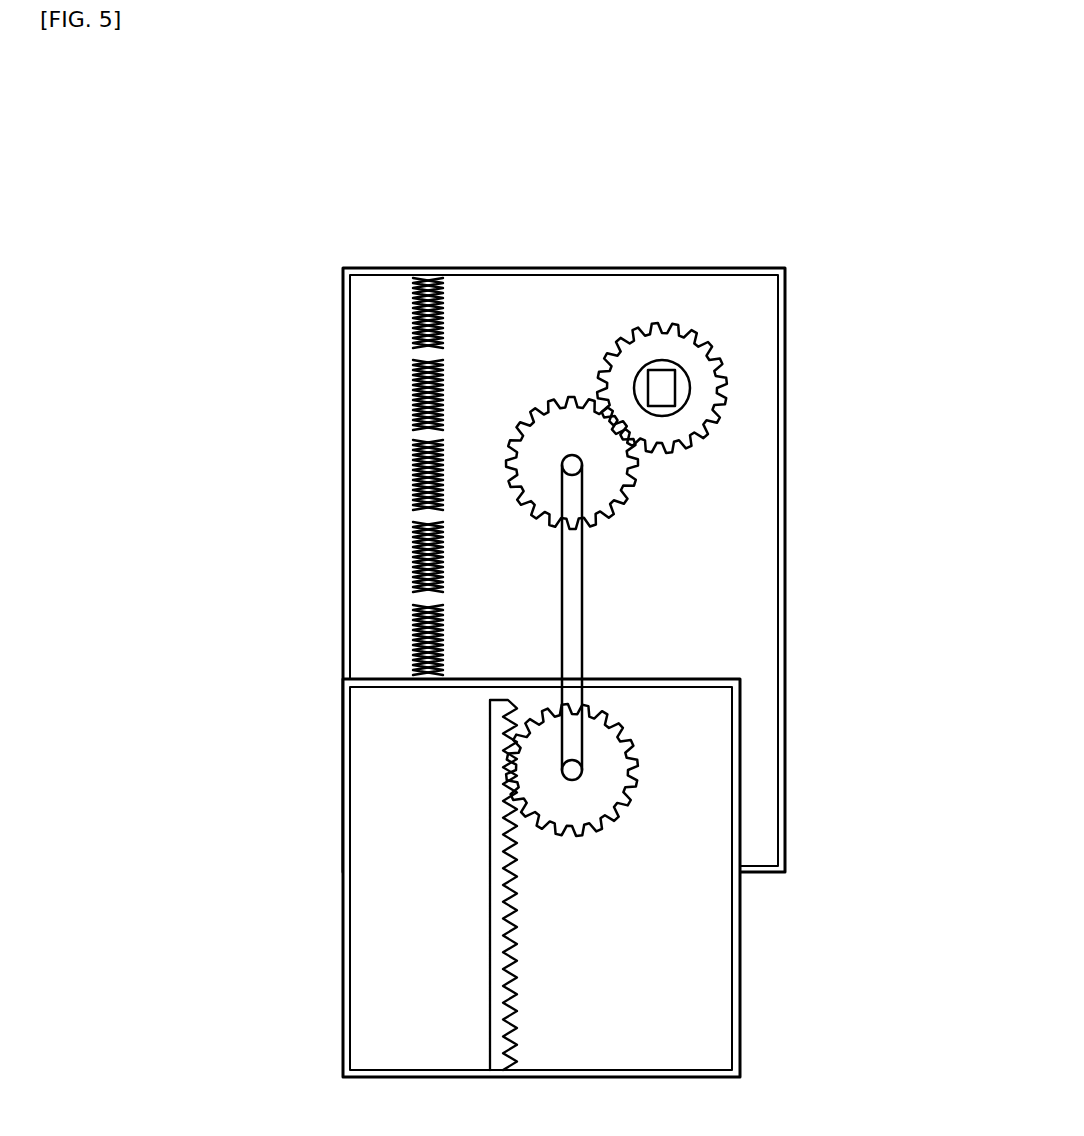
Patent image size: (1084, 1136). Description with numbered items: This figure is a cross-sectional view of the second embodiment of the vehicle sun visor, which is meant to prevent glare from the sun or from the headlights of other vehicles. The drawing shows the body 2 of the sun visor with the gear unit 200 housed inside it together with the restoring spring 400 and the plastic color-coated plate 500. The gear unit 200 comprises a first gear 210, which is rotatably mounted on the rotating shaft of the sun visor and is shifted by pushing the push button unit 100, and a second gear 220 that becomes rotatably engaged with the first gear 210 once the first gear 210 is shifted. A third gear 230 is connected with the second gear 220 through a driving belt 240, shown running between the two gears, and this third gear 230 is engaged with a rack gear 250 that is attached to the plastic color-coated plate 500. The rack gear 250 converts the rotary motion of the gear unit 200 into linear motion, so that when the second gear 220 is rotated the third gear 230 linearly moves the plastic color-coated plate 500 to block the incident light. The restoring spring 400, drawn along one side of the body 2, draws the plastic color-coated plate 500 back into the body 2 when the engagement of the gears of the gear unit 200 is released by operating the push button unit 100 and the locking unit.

The body 2 is at (760, 712).
The push button unit 100 is at (662, 388).
The gear unit 200 is at (645, 549).
The first gear 210 is at (675, 342).
The second gear 220 is at (562, 420).
The third gear 230 is at (603, 792).
The driving belt 240 is at (582, 595).
The rack gear 250 is at (495, 967).
The restoring spring 400 is at (415, 650).
The plastic color-coated plate 500 is at (717, 975).